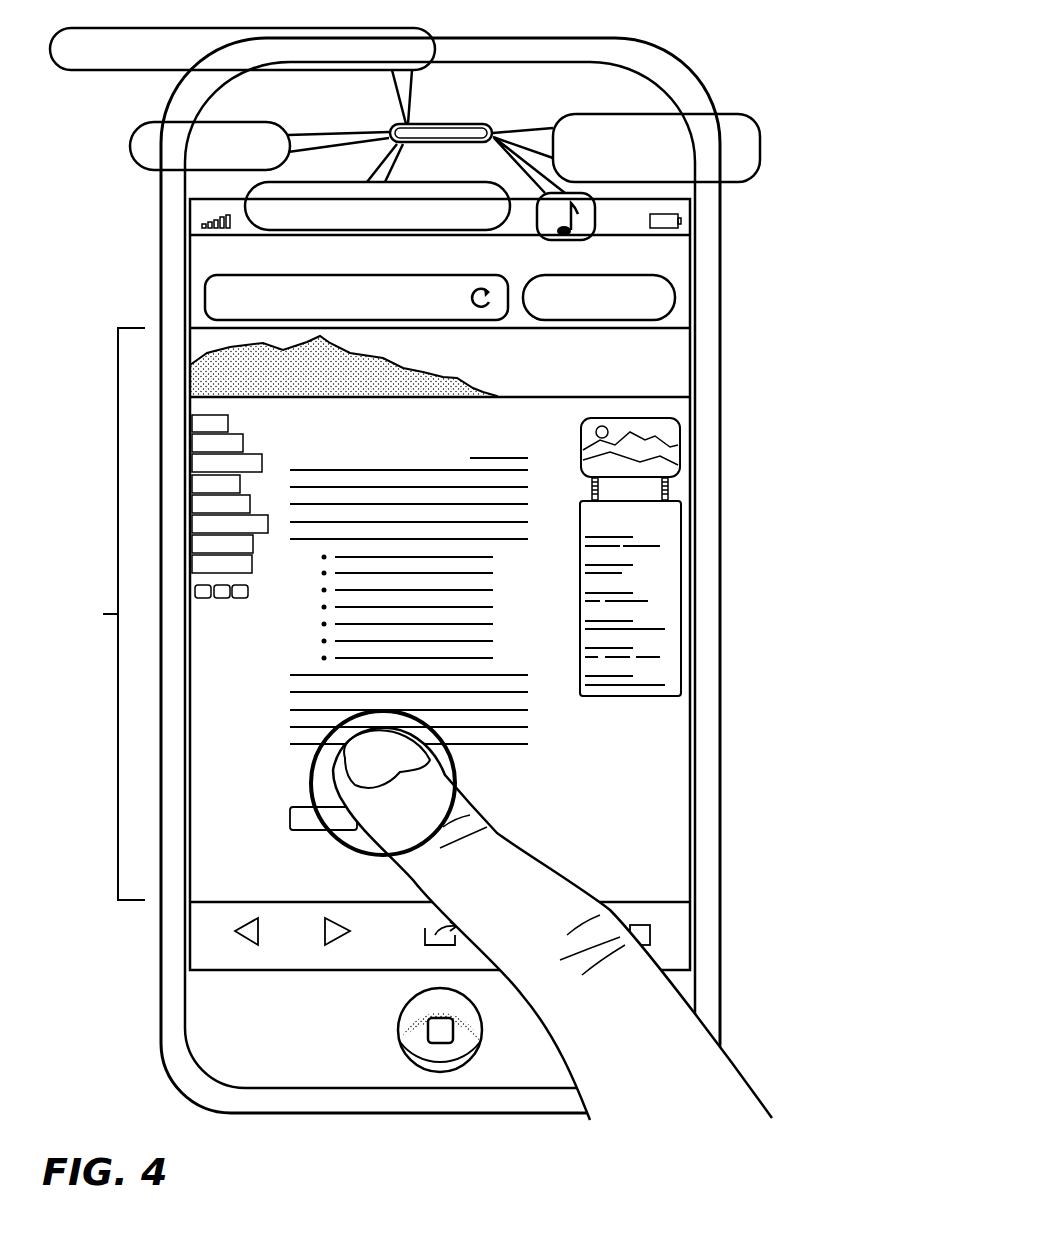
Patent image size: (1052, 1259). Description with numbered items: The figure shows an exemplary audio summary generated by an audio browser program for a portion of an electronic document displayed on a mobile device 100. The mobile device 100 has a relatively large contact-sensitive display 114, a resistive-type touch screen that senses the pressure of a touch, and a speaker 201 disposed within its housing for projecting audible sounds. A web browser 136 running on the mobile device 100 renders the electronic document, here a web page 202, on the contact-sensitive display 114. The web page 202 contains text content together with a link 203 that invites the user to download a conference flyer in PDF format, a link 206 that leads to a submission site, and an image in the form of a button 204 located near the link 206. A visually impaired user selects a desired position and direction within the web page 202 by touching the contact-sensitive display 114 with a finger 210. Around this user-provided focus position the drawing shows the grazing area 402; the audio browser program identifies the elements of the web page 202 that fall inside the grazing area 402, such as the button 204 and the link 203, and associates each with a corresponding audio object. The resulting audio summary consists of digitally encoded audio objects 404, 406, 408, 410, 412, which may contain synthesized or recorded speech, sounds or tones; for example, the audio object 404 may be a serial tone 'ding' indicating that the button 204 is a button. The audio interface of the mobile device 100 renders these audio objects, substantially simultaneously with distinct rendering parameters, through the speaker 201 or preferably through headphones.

The mobile device 100 is at (781, 67).
The speaker 201 is at (499, 117).
The web browser 136 is at (200, 257).
The contact-sensitive display 114 is at (680, 408).
The web page 202 is at (314, 643).
The link 203 is at (500, 777).
The button 204 is at (288, 819).
The link 206 is at (592, 821).
The finger 210 is at (445, 878).
The grazing area 402 is at (338, 842).
The audio object 404 is at (578, 237).
The audio object 406 is at (248, 122).
The audio object 408 is at (621, 118).
The audio object 410 is at (437, 182).
The audio object 412 is at (98, 72).